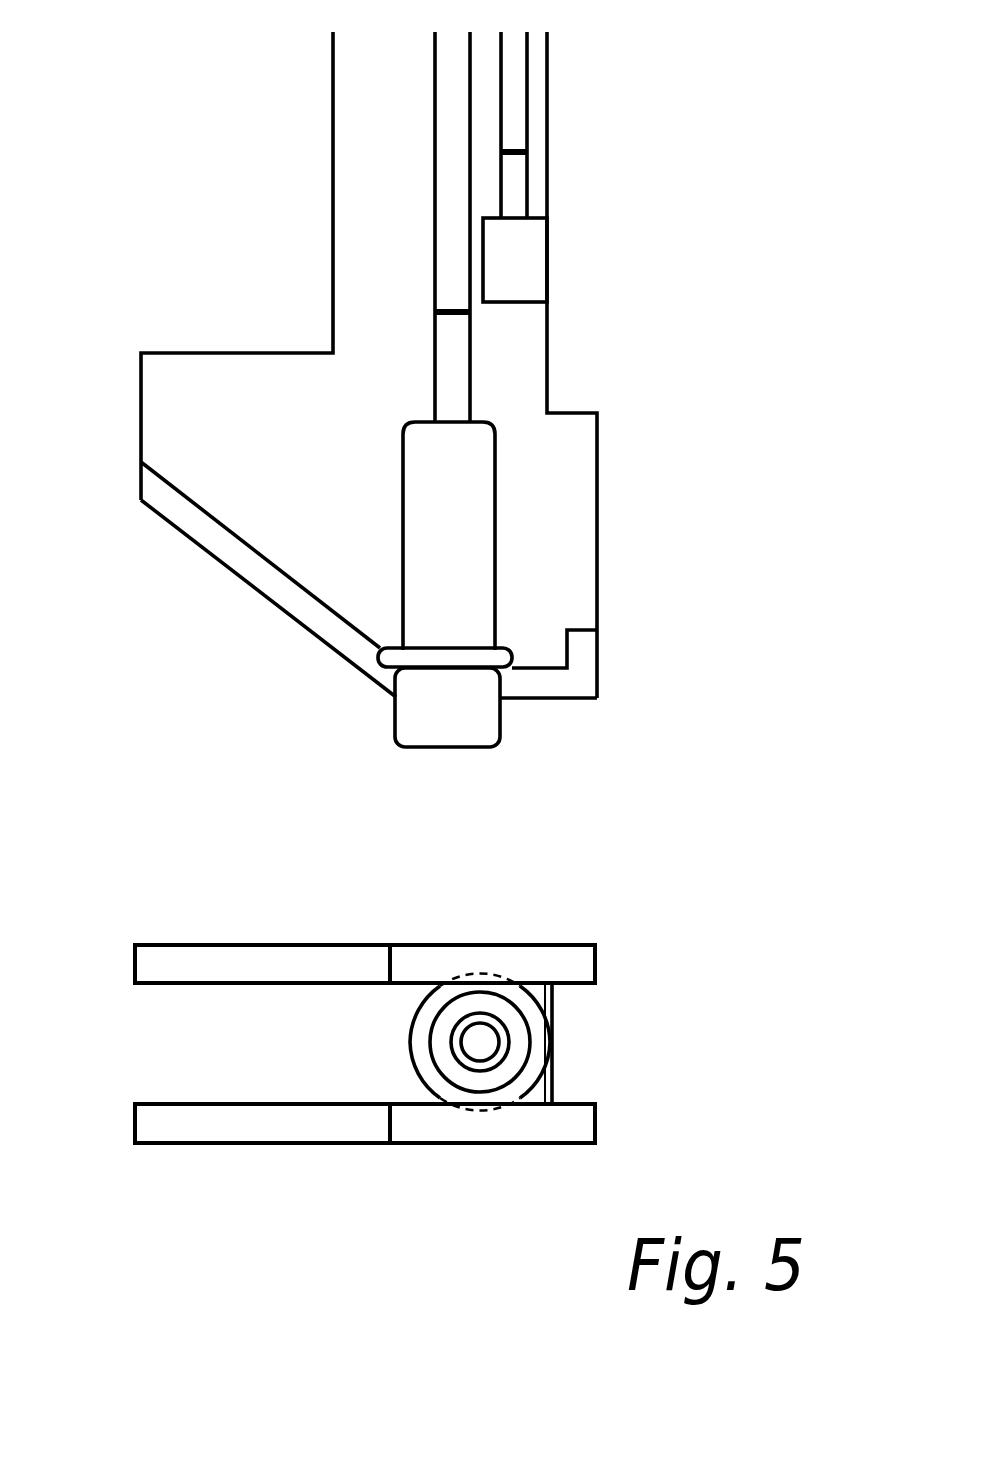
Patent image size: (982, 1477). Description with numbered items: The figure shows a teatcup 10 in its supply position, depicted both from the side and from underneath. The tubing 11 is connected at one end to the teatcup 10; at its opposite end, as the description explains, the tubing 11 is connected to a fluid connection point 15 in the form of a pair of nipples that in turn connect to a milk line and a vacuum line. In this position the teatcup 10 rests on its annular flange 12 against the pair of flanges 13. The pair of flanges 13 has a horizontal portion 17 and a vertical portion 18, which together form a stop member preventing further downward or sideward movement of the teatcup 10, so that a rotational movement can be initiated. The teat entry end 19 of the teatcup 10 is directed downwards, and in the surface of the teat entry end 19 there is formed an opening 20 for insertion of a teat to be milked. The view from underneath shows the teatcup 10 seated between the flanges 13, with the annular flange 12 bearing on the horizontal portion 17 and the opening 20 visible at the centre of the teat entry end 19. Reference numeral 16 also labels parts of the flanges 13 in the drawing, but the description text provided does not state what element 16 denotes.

The teatcup 10 is at (472, 462).
The tubing 11 is at (453, 145).
The annular flange 12 is at (510, 642).
The pair of flanges 13 is at (280, 522).
The fluid connection point 15 is at (522, 260).
The first clamp plate 16 is at (253, 577).
The horizontal portion 17 is at (537, 697).
The vertical portion 18 is at (580, 660).
The teat entry end 19 is at (445, 748).
The opening 20 is at (483, 1037).